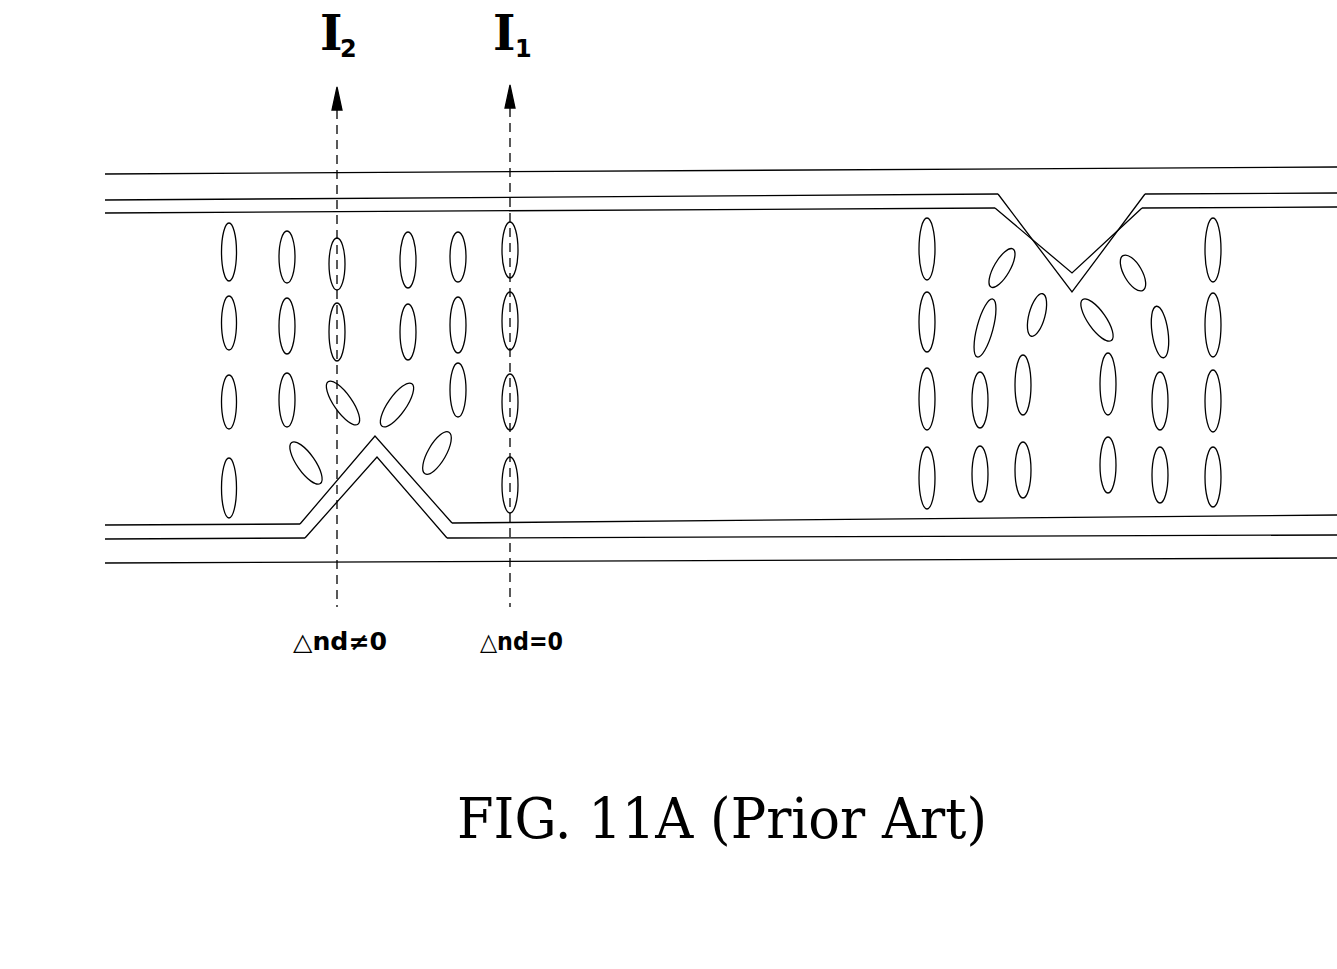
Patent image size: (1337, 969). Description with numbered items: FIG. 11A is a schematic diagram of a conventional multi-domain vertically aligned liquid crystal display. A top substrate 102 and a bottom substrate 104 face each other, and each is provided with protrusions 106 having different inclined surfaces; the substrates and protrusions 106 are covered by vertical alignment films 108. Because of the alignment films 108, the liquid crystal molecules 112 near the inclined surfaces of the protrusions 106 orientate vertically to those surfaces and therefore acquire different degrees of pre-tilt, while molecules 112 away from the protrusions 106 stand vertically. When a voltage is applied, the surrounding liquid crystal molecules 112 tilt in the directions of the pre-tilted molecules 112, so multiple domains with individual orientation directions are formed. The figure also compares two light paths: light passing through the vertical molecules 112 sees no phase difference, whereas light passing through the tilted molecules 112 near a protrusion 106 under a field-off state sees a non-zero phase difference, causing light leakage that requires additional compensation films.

The top substrate 102 is at (747, 187).
The bottom substrate 104 is at (740, 545).
The protrusions 106 is at (1090, 215).
The vertical alignment films 108 is at (813, 208).
The liquid crystal molecules 112 is at (457, 450).